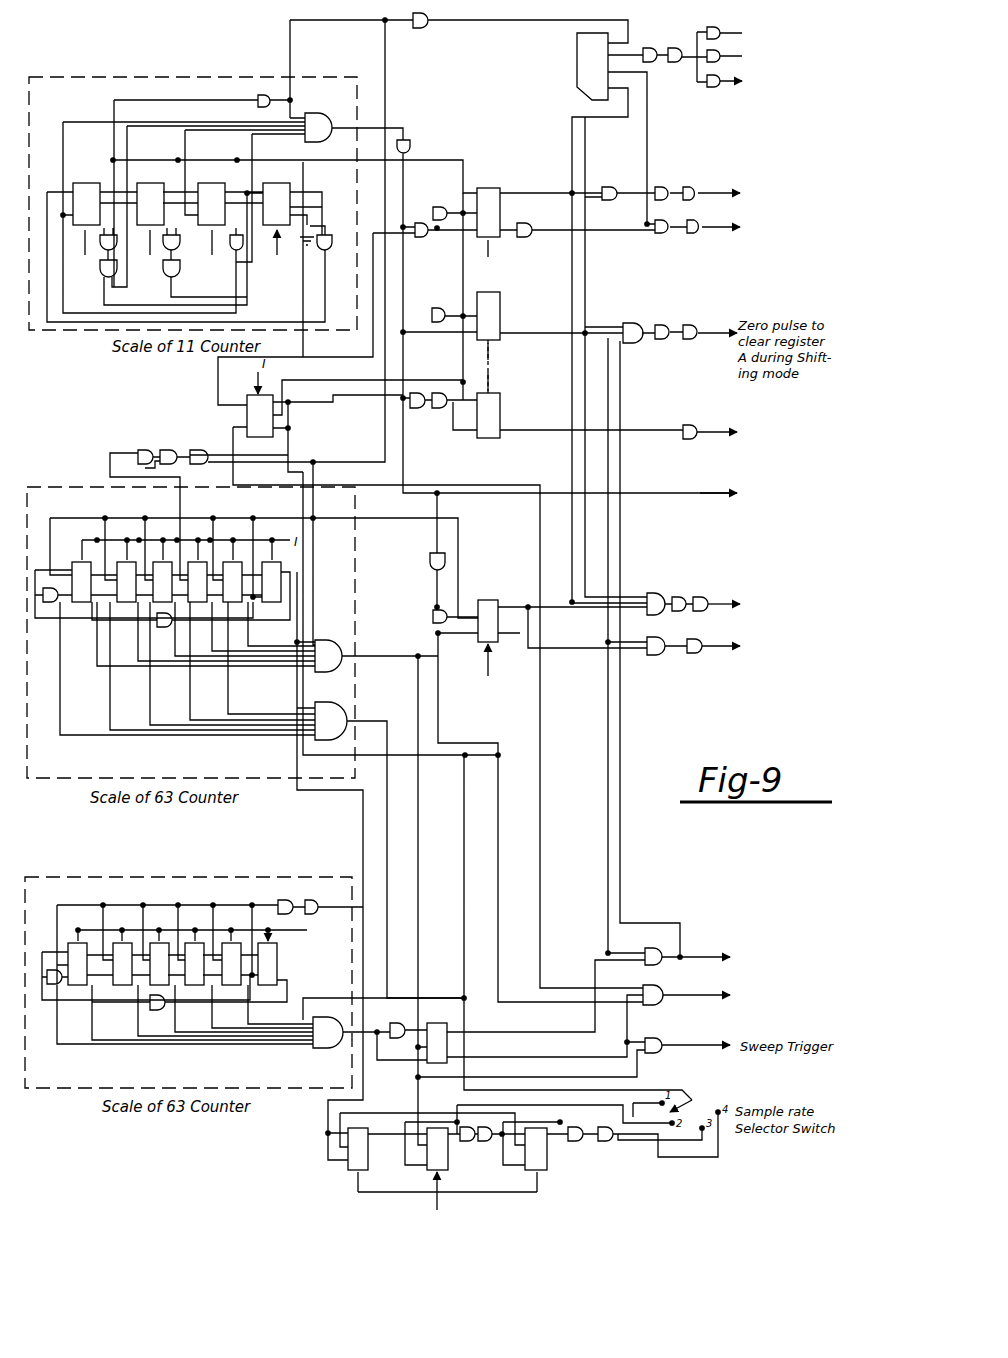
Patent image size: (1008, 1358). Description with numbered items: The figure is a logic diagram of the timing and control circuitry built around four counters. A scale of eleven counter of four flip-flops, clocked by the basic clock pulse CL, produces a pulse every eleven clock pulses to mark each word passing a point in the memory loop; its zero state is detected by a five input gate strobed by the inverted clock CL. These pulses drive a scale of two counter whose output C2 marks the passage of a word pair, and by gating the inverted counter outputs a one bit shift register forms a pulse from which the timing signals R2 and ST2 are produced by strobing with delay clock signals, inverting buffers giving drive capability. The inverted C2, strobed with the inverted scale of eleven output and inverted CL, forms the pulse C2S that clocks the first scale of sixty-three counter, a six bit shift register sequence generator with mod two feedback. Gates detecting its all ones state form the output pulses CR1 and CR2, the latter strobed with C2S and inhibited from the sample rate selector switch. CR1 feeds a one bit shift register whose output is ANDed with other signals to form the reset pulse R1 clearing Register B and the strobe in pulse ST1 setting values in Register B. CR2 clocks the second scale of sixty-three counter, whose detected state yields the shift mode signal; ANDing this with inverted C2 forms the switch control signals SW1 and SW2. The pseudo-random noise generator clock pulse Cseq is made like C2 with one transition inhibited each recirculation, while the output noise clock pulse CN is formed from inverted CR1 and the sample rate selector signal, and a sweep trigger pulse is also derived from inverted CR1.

The basic clock pulse CL is at (488, 69).
The scale of two counter output C2 is at (240, 392).
The first scale of 63 counter clock pulse C2S is at (159, 515).
The first scale of 63 counter output pulse CR1 is at (481, 819).
The strobed scale of 63 counter output pulse CR2 is at (390, 851).
The reset pulse for output gating and carry flip-flop R2 is at (765, 183).
The strobe pulse for output gating latches ST2 is at (765, 246).
The pseudo-random noise generator clock pulse Cseq is at (751, 441).
The output noise clock pulse CN is at (751, 501).
The reset pulse to clear Register B R1 is at (741, 606).
The strobe in pulse to set Register B ST1 is at (746, 670).
The control signal for serial data flow switch 2 SW2 is at (744, 961).
The control signal for serial data flow switch 1 SW1 is at (746, 1005).